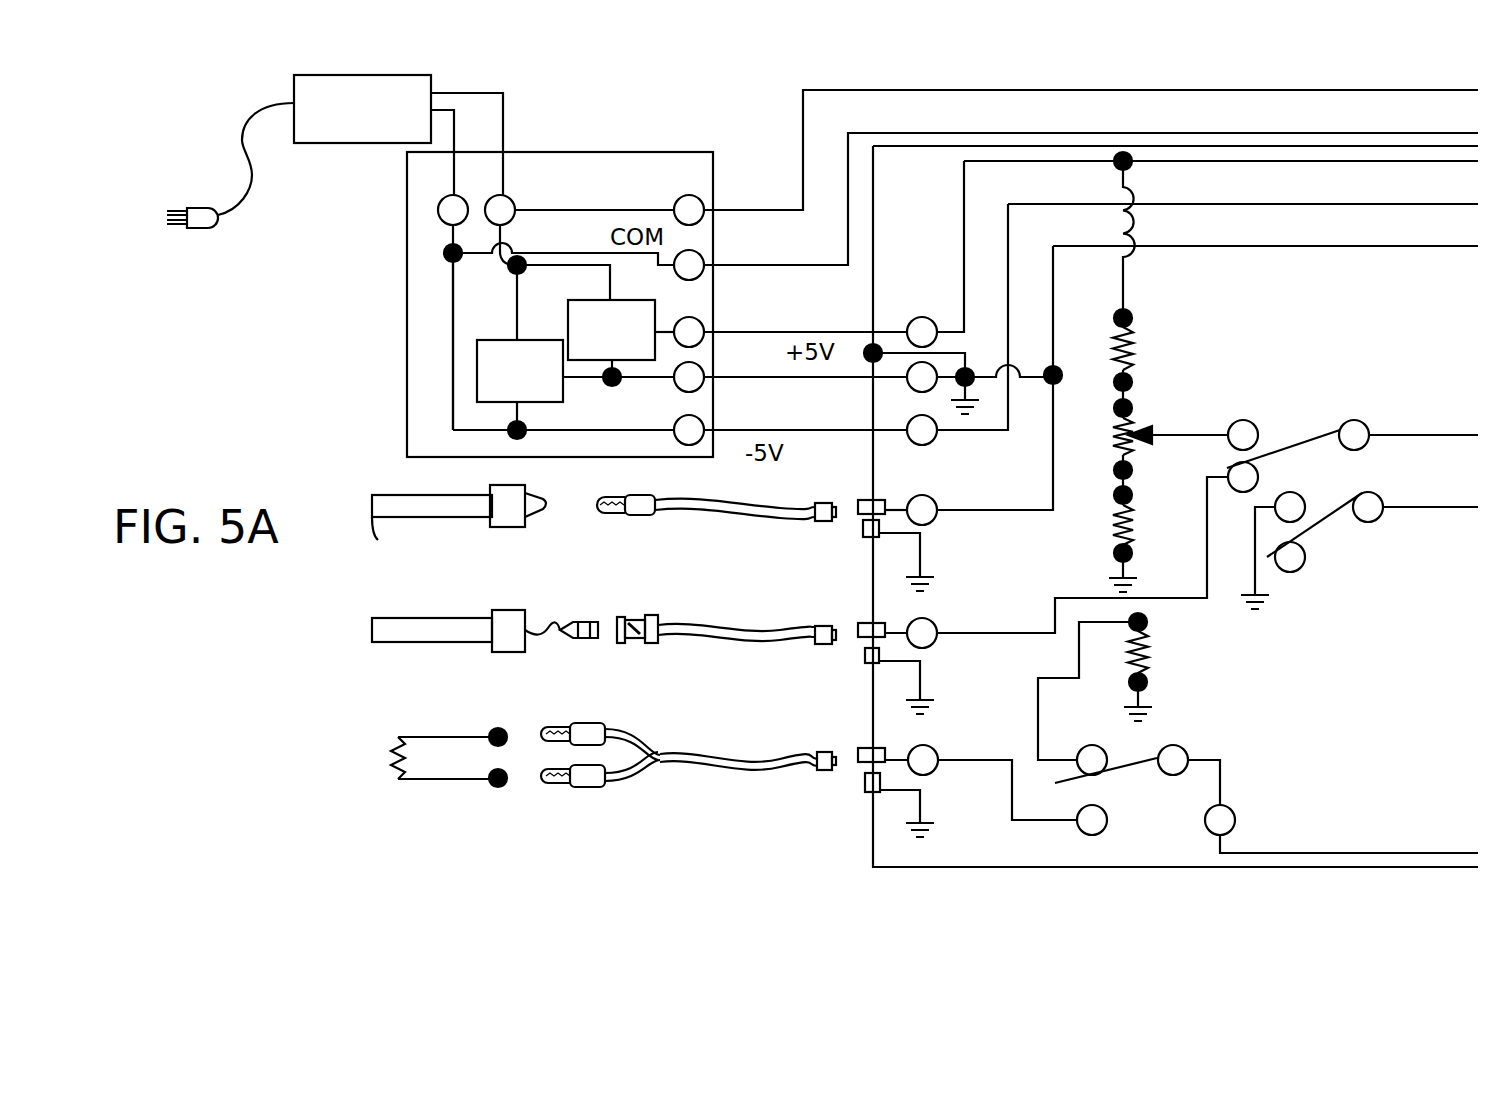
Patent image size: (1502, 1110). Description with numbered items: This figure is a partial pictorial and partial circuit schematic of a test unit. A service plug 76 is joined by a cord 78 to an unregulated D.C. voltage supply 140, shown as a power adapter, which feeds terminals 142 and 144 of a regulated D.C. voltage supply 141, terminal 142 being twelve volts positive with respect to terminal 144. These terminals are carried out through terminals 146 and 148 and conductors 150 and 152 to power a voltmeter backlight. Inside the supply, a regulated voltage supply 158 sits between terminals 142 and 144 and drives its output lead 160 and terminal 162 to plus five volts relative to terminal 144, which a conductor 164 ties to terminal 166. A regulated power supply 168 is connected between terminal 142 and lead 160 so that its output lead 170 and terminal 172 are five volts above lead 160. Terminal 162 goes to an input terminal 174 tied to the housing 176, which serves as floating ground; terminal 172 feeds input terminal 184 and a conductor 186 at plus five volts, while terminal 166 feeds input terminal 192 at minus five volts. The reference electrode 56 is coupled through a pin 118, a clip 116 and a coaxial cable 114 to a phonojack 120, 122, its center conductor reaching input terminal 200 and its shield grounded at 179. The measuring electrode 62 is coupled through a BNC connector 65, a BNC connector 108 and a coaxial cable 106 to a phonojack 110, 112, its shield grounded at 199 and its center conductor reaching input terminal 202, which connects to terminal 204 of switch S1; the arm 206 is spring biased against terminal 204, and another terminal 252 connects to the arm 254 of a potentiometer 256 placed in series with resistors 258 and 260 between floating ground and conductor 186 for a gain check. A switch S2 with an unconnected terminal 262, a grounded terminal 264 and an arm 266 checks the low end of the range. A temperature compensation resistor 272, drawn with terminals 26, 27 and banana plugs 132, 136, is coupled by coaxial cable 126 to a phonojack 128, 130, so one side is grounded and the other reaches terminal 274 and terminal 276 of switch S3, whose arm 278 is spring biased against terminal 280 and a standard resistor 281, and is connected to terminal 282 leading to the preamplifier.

The unregulated D.C. voltage supply 140 is at (294, 93).
The cord 78 is at (252, 172).
The service plug 76 is at (200, 228).
The regulated D.C. voltage supply 141 is at (640, 150).
The terminal 144 is at (438, 210).
The terminal 142 is at (503, 195).
The terminal 146 is at (702, 197).
The terminal 148 is at (700, 255).
The regulated power supply 168 is at (655, 303).
The output lead 170 is at (660, 330).
The regulated voltage supply 158 is at (505, 340).
The conductor 164 is at (453, 398).
The output lead 160 is at (565, 381).
The terminal 172 is at (704, 333).
The terminal 162 is at (705, 372).
The terminal 166 is at (705, 425).
The conductor 150 is at (832, 90).
The conductor 152 is at (1028, 132).
The input terminal 184 is at (927, 316).
The conductor 186 is at (1128, 157).
The input terminal 174 is at (910, 391).
The input terminal 192 is at (930, 443).
The input terminal 200 is at (932, 522).
The phonojack 122 is at (866, 496).
The shield ground connection 179 is at (879, 530).
The phonojack 112 is at (865, 620).
The shield ground connection 199 is at (879, 660).
The input terminal 202 is at (930, 620).
The phonojack 130 is at (862, 746).
The terminal 274 is at (932, 748).
The housing 176 is at (997, 867).
The standard resistor 281 is at (1145, 657).
The terminal 280 is at (1098, 745).
The arm 278 is at (1118, 770).
The terminal 282 is at (1232, 810).
The terminal 276 is at (1090, 835).
The switch S3 is at (1203, 748).
The resistor 258 is at (1133, 353).
The potentiometer 256 is at (1134, 445).
The resistor 260 is at (1113, 522).
The arm 254 is at (1220, 430).
The terminal 252 is at (1252, 422).
The terminal 204 is at (1258, 477).
The arm 206 is at (1363, 443).
The switch S1 is at (1340, 408).
The grounded terminal 264 is at (1310, 500).
The arm 266 is at (1328, 512).
The unconnected terminal 262 is at (1293, 572).
The switch S2 is at (1327, 560).
The reference electrode 56 is at (372, 494).
The pin 118 is at (537, 495).
The clip 116 is at (650, 516).
The coaxial cable 114 is at (748, 512).
The phonojack 120 is at (822, 522).
The measuring electrode 62 is at (372, 618).
The BNC connector 65 is at (593, 622).
The BNC connector 108 is at (625, 620).
The coaxial cable 106 is at (675, 640).
The phonojack 110 is at (834, 645).
The banana plug 132 is at (580, 723).
The banana plug 136 is at (580, 787).
The coaxial cable 126 is at (725, 778).
The phonojack 128 is at (822, 772).
The terminal 26 is at (488, 735).
The terminal 27 is at (498, 788).
The temperature compensation resistor 272 is at (392, 762).